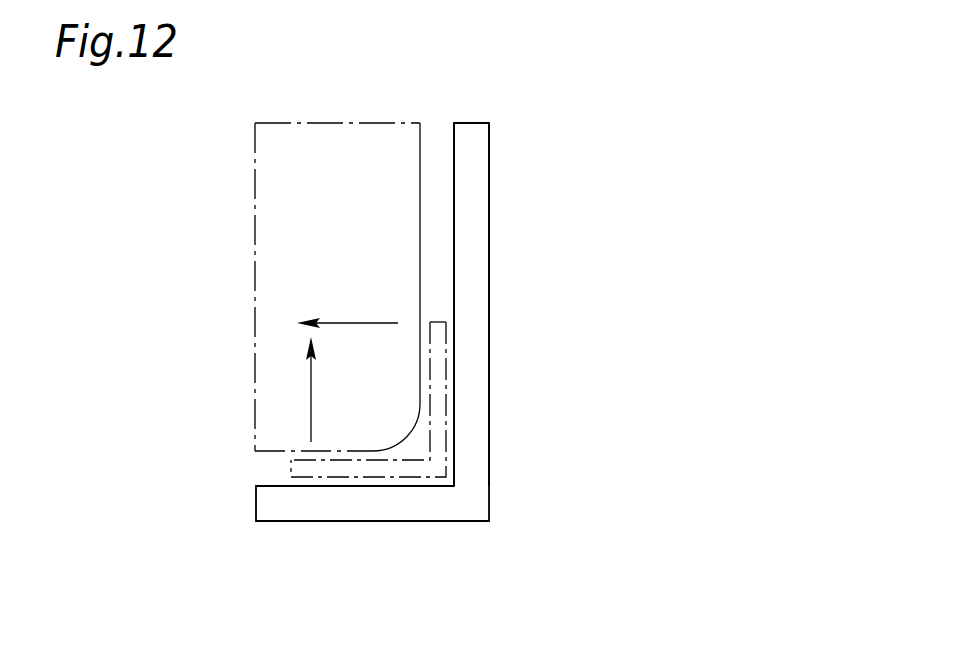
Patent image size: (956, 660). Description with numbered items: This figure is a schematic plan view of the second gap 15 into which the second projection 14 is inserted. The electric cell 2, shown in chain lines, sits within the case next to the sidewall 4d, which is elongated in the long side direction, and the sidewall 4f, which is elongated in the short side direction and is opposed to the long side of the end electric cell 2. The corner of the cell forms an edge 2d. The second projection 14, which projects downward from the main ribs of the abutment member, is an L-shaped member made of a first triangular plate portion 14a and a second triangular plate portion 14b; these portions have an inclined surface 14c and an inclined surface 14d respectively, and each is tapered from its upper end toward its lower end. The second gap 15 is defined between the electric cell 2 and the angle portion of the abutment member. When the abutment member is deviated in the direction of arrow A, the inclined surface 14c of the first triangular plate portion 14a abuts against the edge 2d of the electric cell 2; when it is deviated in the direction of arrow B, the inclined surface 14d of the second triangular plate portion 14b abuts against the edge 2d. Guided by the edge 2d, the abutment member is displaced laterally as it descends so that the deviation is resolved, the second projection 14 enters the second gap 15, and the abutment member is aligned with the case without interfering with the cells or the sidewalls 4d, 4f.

The electric cell 2 is at (268, 275).
The edge of the electric cell 2d is at (420, 149).
The sidewall 4d is at (347, 510).
The sidewall 4f is at (473, 180).
The second projection 14 is at (464, 417).
The first triangular plate portion 14a is at (437, 357).
The second triangular plate portion 14b is at (310, 465).
The inclined surface 14c is at (435, 315).
The inclined surface 14d is at (290, 462).
The second gap 15 is at (450, 460).
The arrow A is at (310, 400).
The arrow B is at (350, 323).